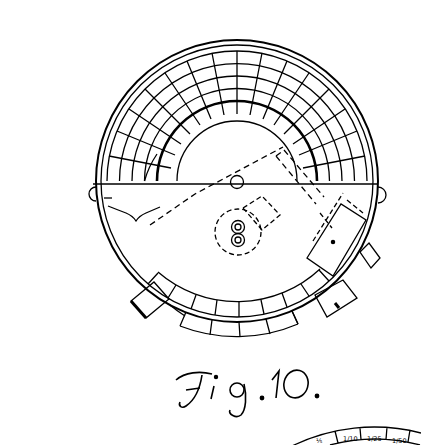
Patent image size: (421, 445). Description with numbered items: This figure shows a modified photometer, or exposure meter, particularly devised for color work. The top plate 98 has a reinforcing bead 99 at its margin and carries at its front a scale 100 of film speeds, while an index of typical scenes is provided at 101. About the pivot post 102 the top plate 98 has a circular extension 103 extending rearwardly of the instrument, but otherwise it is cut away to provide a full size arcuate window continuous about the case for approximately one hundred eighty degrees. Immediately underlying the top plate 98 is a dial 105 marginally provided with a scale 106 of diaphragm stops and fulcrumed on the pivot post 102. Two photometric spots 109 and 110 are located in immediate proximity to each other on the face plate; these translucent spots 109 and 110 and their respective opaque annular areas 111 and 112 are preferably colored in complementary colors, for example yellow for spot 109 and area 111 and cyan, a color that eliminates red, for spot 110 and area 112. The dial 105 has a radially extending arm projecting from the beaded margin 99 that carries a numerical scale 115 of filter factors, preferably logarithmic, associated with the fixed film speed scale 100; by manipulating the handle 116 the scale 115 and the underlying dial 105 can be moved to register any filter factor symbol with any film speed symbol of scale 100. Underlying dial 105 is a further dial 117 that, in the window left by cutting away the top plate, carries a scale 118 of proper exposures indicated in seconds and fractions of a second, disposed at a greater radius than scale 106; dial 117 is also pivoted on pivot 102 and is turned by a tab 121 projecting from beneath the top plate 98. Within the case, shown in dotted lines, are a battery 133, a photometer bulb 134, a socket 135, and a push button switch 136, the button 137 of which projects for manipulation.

The top plate 98 is at (222, 181).
The reinforcing bead 99 is at (215, 181).
The scale of film speeds 100 is at (159, 333).
The index of typical scenes 101 is at (215, 213).
The pivot post 102 is at (258, 176).
The circular extension 103 is at (274, 166).
The dial 105 is at (237, 141).
The scale of diaphragm stops 106 is at (183, 167).
The photometric spot 109 is at (211, 226).
The photometric spot 110 is at (211, 246).
The opaque annular area 111 is at (273, 236).
The opaque annular area 112 is at (269, 252).
The numerical scale 115 is at (312, 335).
The handle 116 is at (238, 316).
The dial 117 is at (204, 119).
The scale 118 is at (237, 107).
The tab 121 is at (128, 307).
The battery 133 is at (193, 201).
The photometer bulb 134 is at (230, 241).
The socket 135 is at (270, 211).
The push button switch 136 is at (360, 234).
The button 137 is at (390, 260).